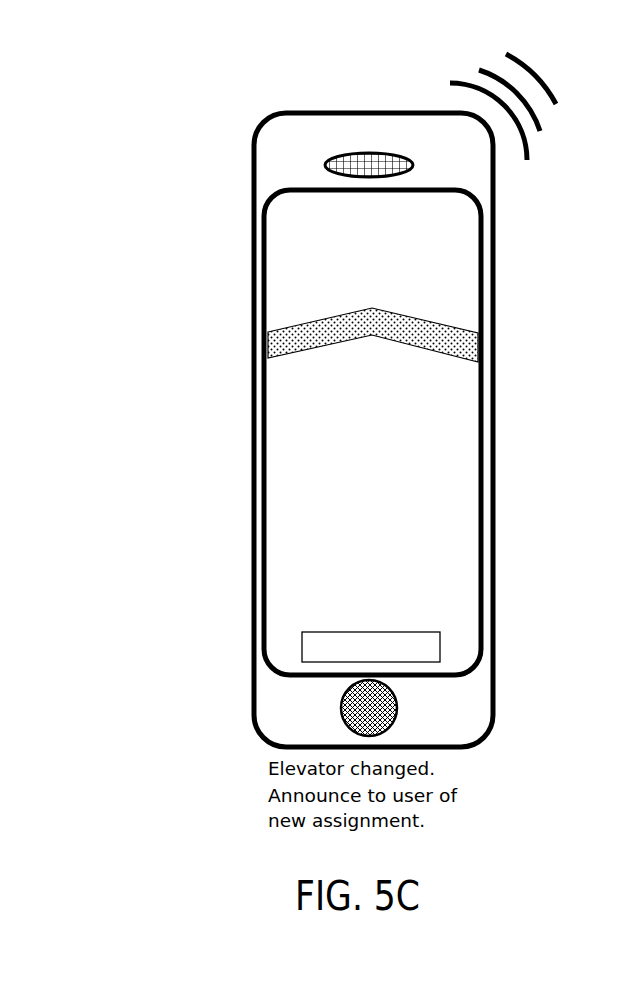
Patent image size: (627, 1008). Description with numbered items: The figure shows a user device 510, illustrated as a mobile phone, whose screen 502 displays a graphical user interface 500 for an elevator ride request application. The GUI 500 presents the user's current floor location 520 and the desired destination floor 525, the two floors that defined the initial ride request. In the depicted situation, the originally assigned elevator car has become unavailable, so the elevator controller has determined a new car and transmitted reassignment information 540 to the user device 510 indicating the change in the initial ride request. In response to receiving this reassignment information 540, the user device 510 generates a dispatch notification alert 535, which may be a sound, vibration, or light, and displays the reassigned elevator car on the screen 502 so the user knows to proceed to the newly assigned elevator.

The graphical user interface 500 is at (283, 305).
The screen 502 is at (283, 552).
The user device 510 is at (252, 141).
The current floor location 520 is at (375, 393).
The destination floor 525 is at (415, 267).
The dispatch notification alert 535 is at (450, 67).
The reassignment information 540 is at (423, 552).